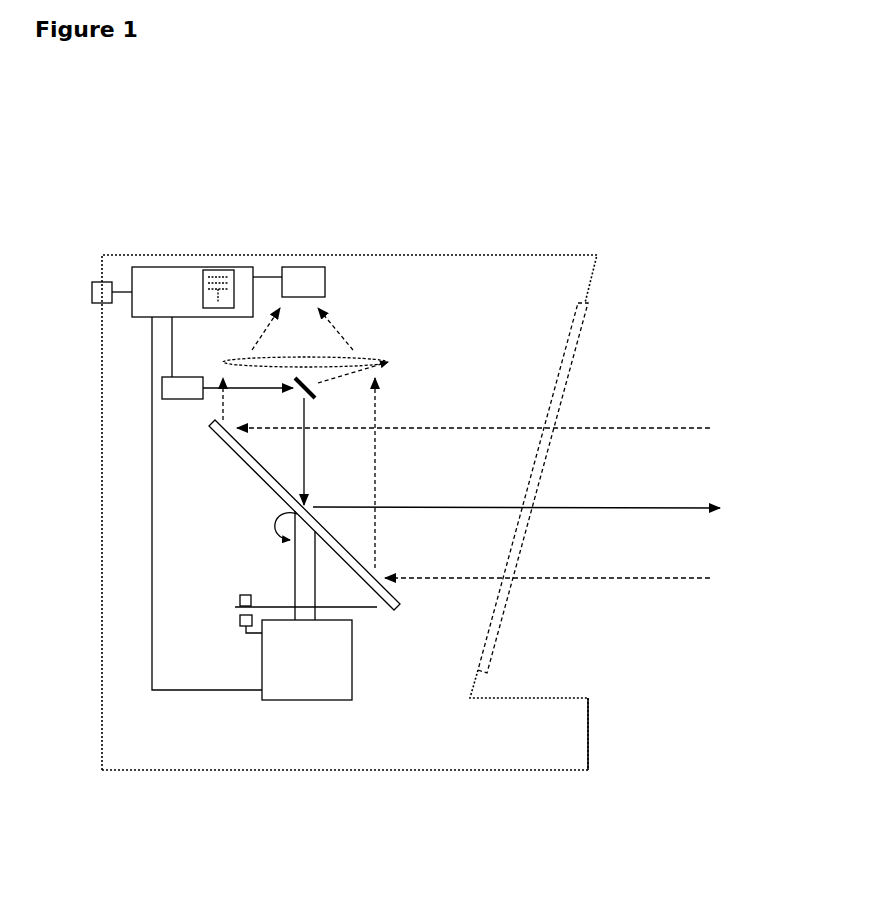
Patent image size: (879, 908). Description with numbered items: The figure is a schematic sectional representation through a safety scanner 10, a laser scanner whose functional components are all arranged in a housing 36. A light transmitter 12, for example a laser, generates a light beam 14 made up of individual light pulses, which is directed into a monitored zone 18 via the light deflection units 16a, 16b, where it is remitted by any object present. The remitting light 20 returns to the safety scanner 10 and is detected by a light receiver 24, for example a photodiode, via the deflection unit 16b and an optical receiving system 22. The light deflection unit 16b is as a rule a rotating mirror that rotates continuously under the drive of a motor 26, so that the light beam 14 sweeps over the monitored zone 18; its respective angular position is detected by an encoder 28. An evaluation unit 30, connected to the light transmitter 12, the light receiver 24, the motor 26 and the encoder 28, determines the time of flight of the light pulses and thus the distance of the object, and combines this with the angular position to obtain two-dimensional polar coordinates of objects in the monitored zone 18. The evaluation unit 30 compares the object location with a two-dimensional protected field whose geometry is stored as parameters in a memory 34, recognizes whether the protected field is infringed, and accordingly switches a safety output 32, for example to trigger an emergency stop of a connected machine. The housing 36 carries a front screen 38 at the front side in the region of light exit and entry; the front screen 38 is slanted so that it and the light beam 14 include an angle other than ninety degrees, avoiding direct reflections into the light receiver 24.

The safety scanner 10 is at (563, 190).
The light transmitter 12 is at (173, 388).
The light beam 14 is at (607, 508).
The light deflection unit 16a is at (392, 367).
The light deflection unit 16b is at (272, 480).
The monitored zone 18 is at (758, 348).
The remitting light 20 is at (658, 430).
The optical receiving system 22 is at (363, 358).
The light receiver 24 is at (326, 284).
The motor 26 is at (345, 690).
The encoder 28 is at (242, 612).
The evaluation unit 30 is at (172, 267).
The safety output 32 is at (98, 295).
The memory 34 is at (223, 275).
The housing 36 is at (468, 770).
The front screen 38 is at (497, 640).